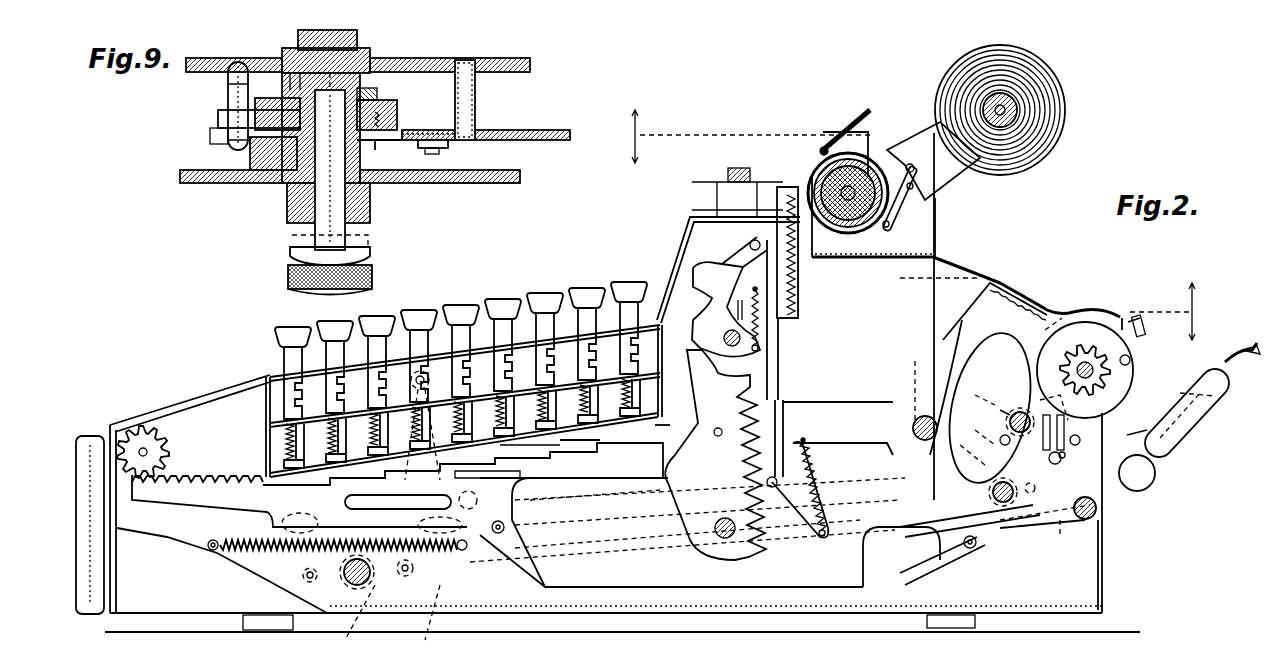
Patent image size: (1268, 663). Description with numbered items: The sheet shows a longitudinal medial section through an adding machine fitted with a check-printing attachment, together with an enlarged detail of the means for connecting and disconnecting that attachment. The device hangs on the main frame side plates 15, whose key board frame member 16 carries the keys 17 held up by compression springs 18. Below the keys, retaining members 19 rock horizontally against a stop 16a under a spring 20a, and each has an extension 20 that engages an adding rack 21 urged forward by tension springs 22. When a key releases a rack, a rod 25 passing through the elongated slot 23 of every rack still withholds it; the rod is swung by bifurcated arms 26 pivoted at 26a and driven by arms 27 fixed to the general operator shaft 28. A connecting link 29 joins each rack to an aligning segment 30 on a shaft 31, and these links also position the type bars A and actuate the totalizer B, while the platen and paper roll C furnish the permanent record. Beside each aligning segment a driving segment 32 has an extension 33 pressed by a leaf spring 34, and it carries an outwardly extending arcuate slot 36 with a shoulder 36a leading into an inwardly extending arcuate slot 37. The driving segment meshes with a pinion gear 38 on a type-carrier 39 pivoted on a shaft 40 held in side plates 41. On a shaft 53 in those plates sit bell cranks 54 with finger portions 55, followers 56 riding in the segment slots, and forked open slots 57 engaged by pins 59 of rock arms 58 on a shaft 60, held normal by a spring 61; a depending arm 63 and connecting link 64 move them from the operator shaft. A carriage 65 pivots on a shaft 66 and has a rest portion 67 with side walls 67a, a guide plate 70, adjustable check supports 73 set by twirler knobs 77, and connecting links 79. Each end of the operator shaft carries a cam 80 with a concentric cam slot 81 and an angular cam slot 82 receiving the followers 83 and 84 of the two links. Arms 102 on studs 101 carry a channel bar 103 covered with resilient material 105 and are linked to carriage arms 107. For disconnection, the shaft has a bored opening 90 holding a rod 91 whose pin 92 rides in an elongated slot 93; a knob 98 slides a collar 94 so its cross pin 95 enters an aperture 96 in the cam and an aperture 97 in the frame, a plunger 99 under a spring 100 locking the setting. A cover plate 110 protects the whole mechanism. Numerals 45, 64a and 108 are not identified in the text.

In FIG. 9, the main frame side plates 15 is at (445, 58).
In FIG. 2, the main frame side plates 15 is at (852, 302).
In FIG. 2, the key board frame member 16 is at (268, 413).
In FIG. 2, the stop 16a is at (602, 441).
In FIG. 2, the keys 17 is at (388, 313).
In FIG. 2, the compression springs 18 is at (268, 438).
In FIG. 2, the retaining members 19 is at (562, 444).
In FIG. 2, the extension 20 is at (655, 442).
In FIG. 2, the spring 20a is at (670, 422).
In FIG. 2, the adding rack 21 is at (218, 500).
In FIG. 2, the tension springs 22 is at (288, 551).
In FIG. 2, the elongated slot 23 is at (345, 502).
In FIG. 2, the rod 25 is at (478, 500).
In FIG. 2, the bifurcated arms 26 is at (480, 478).
In FIG. 2, the pivot 26a is at (426, 380).
In FIG. 2, the arms 27 is at (495, 533).
In FIG. 9, the general operator shaft 28 is at (350, 45).
In FIG. 2, the general operator shaft 28 is at (345, 580).
In FIG. 2, the connecting link 29 is at (655, 575).
In FIG. 2, the aligning segments 30 is at (838, 407).
In FIG. 2, the shaft 31 is at (925, 414).
In FIG. 2, the driving segment 32 is at (995, 311).
In FIG. 2, the extension 33 is at (876, 460).
In FIG. 2, the leaf spring 34 is at (822, 470).
In FIG. 2, the angular outwardly-extending arcuate slot 36 is at (1110, 412).
In FIG. 2, the shoulder 36a is at (1090, 422).
In FIG. 2, the angular inwardly-extending arcuate slot 37 is at (1075, 446).
In FIG. 2, the pinion gear 38 is at (1108, 370).
In FIG. 2, the type-carrier 39 is at (1130, 359).
In FIG. 2, the shaft 40 is at (1100, 385).
In FIG. 2, the side plates 41 is at (975, 361).
In FIG. 2, the pivot stud 45 is at (1019, 410).
In FIG. 2, the shaft 53 is at (1000, 410).
In FIG. 2, the bell cranks 54 is at (975, 396).
In FIG. 2, the finger portion 55 is at (1003, 435).
In FIG. 2, the follower 56 is at (1066, 456).
In FIG. 2, the open slot 57 is at (975, 430).
In FIG. 2, the rock arms 58 is at (993, 493).
In FIG. 2, the pins 59 is at (975, 455).
In FIG. 2, the shaft 60 is at (1028, 484).
In FIG. 2, the spring 61 is at (1055, 464).
In FIG. 2, the depending arm 63 is at (1028, 530).
In FIG. 9, the connecting link 64 is at (561, 126).
In FIG. 2, the connecting link 64 is at (978, 542).
In FIG. 9, the plate extension 64a is at (505, 130).
In FIG. 2, the carriage 65 is at (1175, 458).
In FIG. 2, the shaft 66 is at (1098, 512).
In FIG. 2, the rest portion 67 is at (1247, 358).
In FIG. 2, the side walls 67a is at (1205, 418).
In FIG. 2, the guide plate 70 is at (1200, 372).
In FIG. 2, the adjustable guide or check support 73 is at (1148, 434).
In FIG. 2, the twirler knobs 77 is at (1150, 485).
In FIG. 2, the connecting links 79 is at (550, 505).
In FIG. 9, the cam 80 is at (392, 162).
In FIG. 2, the cam 80 is at (348, 621).
In FIG. 2, the concentric cam slot 81 is at (438, 523).
In FIG. 9, the cam slot 82 is at (442, 148).
In FIG. 2, the cam slot 82 is at (424, 619).
In FIG. 2, the follower 83 is at (310, 520).
In FIG. 9, the follower 84 is at (400, 150).
In FIG. 2, the follower 84 is at (412, 572).
In FIG. 9, the bored opening 90 is at (345, 95).
In FIG. 9, the rod 91 is at (335, 190).
In FIG. 9, the pin 92 is at (292, 102).
In FIG. 9, the elongated slot 93 is at (290, 78).
In FIG. 9, the collar 94 is at (270, 160).
In FIG. 9, the cross pin 95 is at (228, 94).
In FIG. 2, the cross pin 95 is at (303, 577).
In FIG. 9, the aperture 96 is at (215, 145).
In FIG. 9, the aperture 97 is at (238, 62).
In FIG. 9, the knob 98 is at (288, 260).
In FIG. 9, the plunger 99 is at (378, 98).
In FIG. 9, the spring 100 is at (398, 112).
In FIG. 2, the studs 101 is at (1058, 315).
In FIG. 2, the arms 102 is at (1124, 318).
In FIG. 2, the channel bar 103 is at (1146, 327).
In FIG. 2, the resilient material 105 is at (1140, 318).
In FIG. 2, the arms 107 is at (1060, 536).
In FIG. 2, the link 108 is at (1045, 512).
In FIG. 9, the cover plate 110 is at (515, 184).
In FIG. 2, the cover plate 110 is at (998, 259).
In FIG. 2, the type bars A is at (783, 338).
In FIG. 2, the totalizer B is at (140, 418).
In FIG. 2, the platen and paper roll C is at (890, 118).